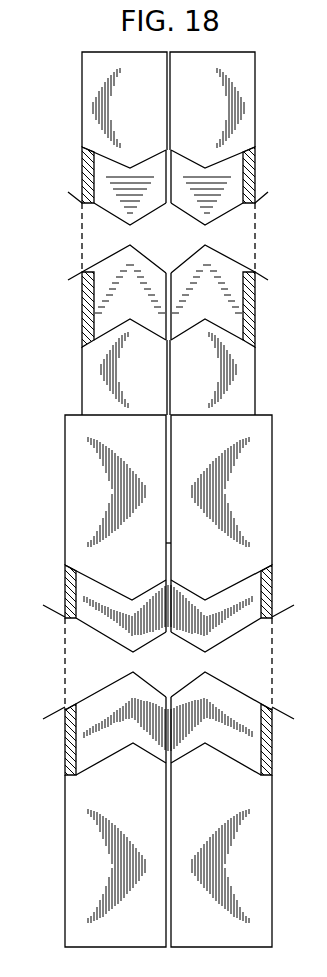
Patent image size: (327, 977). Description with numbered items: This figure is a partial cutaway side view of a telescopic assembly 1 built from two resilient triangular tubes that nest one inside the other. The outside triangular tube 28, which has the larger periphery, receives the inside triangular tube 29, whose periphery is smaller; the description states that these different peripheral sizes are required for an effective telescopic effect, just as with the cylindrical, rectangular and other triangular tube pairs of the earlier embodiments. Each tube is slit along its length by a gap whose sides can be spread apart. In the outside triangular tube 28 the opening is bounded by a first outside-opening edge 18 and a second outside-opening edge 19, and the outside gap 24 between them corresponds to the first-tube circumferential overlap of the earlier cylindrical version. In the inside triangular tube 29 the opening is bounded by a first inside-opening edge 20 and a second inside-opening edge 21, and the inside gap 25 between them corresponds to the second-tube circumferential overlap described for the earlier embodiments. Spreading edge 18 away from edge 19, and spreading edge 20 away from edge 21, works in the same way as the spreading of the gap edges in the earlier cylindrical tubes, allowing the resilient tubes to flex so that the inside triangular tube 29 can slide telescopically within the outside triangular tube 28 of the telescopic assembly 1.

The telescopic assembly 1 is at (49, 479).
The first outside-opening edge 18 is at (165, 830).
The second outside-opening edge 19 is at (172, 830).
The first inside-opening edge 20 is at (165, 172).
The second inside-opening edge 21 is at (172, 172).
The outside gap 24 is at (167, 762).
The inside gap 25 is at (169, 204).
The outside triangular tube 28 is at (139, 794).
The inside triangular tube 29 is at (154, 116).